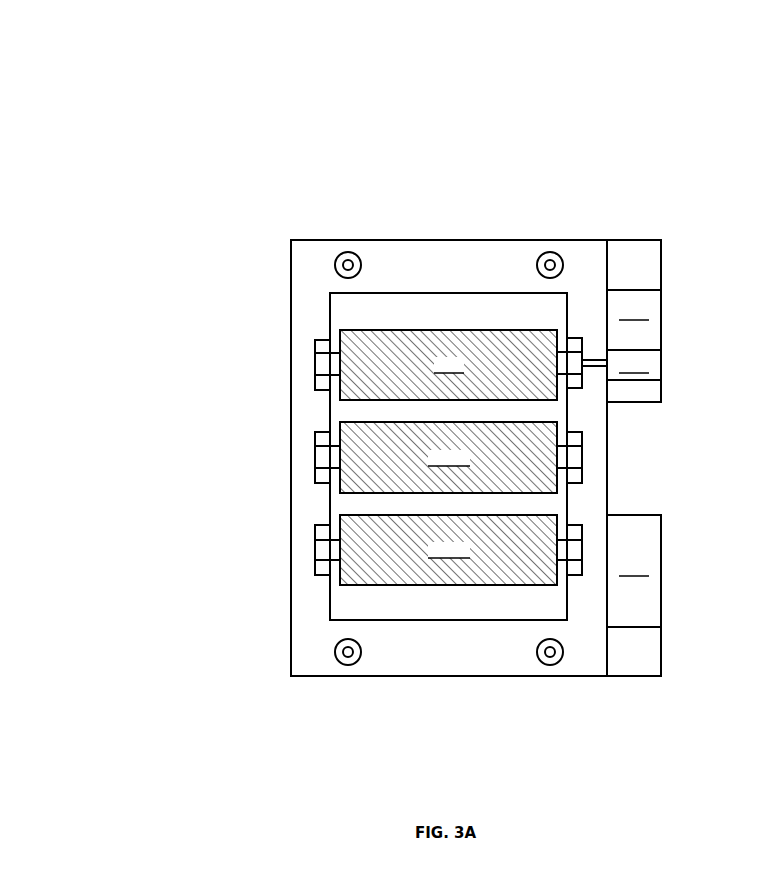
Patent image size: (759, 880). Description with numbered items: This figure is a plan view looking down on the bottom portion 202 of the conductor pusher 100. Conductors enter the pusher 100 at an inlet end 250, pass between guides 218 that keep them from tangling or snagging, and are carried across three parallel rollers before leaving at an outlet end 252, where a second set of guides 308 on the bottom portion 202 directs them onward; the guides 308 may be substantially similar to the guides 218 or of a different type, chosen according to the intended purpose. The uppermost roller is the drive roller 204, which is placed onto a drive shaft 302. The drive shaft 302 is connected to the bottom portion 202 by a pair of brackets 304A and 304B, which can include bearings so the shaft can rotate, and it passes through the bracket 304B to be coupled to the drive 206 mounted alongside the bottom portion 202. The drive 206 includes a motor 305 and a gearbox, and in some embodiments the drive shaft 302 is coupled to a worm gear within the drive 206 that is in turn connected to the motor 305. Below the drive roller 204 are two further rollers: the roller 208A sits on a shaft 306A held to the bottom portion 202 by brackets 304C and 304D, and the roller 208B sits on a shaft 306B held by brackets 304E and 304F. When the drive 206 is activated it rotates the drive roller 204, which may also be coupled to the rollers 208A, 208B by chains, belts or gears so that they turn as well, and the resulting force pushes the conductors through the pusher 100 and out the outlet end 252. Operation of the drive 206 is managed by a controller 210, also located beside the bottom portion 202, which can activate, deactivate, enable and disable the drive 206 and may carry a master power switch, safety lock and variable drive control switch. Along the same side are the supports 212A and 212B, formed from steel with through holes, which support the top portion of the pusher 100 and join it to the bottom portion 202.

The pusher 100 is at (641, 50).
The bottom portion 202 is at (312, 253).
The drive roller 204 is at (448, 365).
The drive 206 is at (634, 320).
The roller 208A is at (448, 457).
The roller 208B is at (448, 550).
The controller 210 is at (634, 571).
The support 212A is at (638, 250).
The support 212B is at (640, 666).
The guides 218 is at (548, 233).
The inlet end 250 is at (194, 213).
The outlet end 252 is at (226, 689).
The drive shaft 302 is at (596, 378).
The bracket 304A is at (325, 343).
The bracket 304B is at (575, 386).
The bracket 304C is at (325, 437).
The bracket 304D is at (576, 474).
The bracket 304E is at (325, 528).
The bracket 304F is at (576, 532).
The motor 305 is at (634, 365).
The shaft 306A is at (336, 461).
The shaft 306B is at (336, 552).
The guides 308 is at (548, 684).